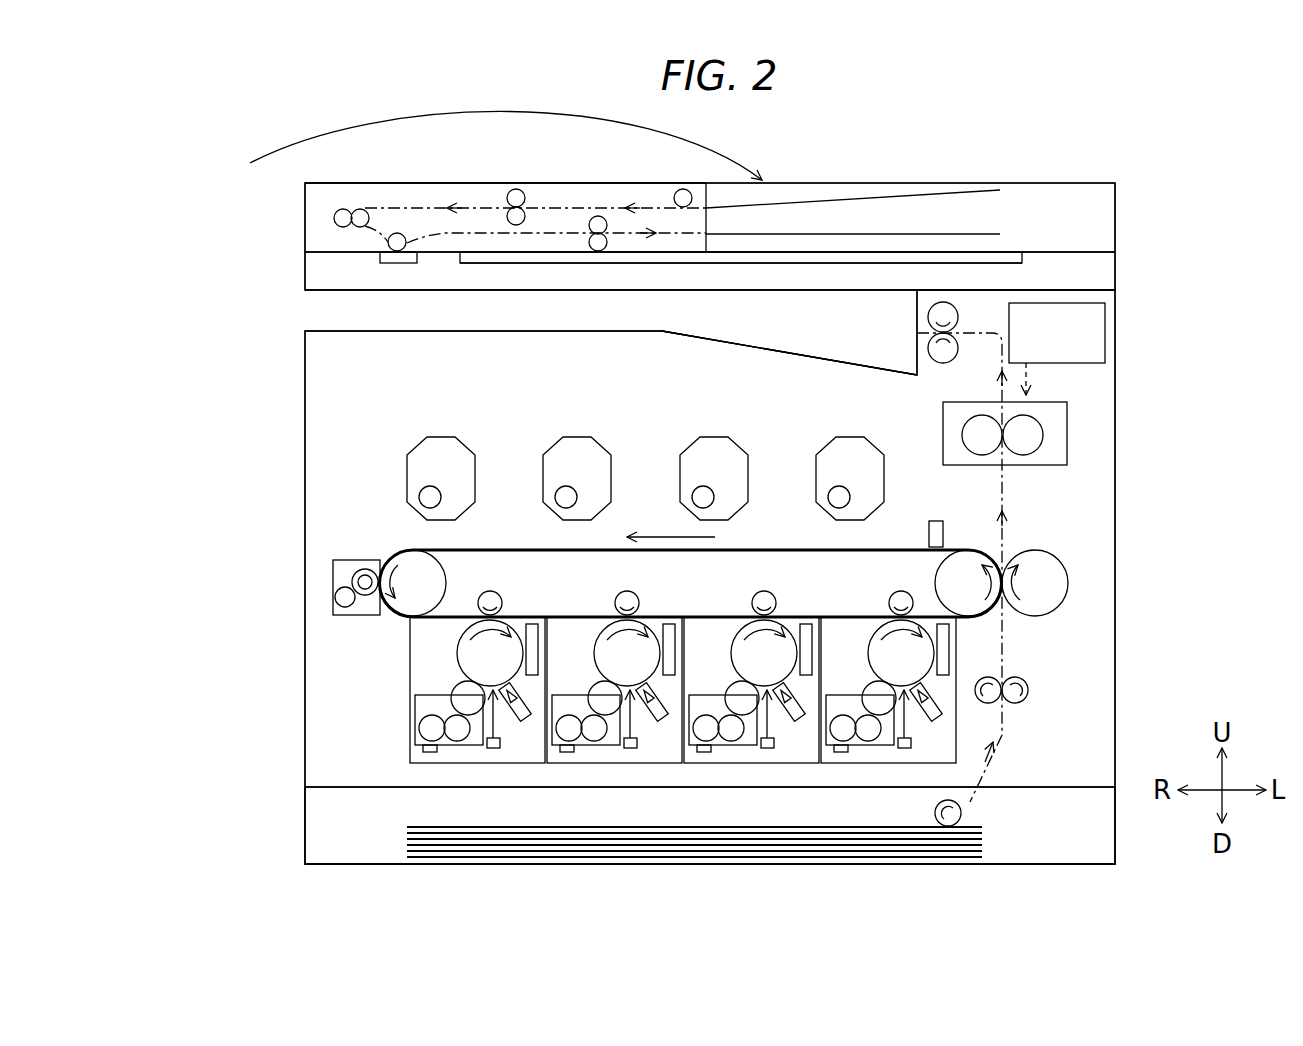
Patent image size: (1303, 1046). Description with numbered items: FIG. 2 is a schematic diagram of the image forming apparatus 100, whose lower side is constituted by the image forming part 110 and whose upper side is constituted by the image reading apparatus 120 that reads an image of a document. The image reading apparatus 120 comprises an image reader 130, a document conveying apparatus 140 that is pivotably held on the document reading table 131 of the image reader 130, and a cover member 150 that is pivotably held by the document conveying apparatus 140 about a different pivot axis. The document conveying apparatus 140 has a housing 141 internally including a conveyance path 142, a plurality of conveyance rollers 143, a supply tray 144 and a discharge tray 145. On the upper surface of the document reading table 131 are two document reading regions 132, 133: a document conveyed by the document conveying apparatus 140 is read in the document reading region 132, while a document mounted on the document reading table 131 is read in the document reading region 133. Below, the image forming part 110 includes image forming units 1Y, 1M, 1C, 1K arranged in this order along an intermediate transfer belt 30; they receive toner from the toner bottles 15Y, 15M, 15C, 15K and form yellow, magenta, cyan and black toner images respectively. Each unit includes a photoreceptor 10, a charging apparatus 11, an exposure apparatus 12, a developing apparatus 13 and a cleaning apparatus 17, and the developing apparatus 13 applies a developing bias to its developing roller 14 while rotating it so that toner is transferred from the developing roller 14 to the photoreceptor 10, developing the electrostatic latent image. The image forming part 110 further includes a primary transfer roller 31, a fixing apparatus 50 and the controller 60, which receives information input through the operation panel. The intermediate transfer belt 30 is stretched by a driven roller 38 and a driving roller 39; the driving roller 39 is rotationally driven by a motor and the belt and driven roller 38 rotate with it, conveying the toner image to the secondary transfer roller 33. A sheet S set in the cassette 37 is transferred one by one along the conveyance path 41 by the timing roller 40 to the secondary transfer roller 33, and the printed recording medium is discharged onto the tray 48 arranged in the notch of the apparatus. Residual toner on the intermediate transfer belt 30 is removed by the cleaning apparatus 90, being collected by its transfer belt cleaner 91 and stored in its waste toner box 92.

The image forming apparatus 100 is at (165, 200).
The image forming part 110 is at (288, 439).
The image reading apparatus 120 is at (212, 150).
The image reader 130 is at (288, 262).
The document reading table 131 is at (543, 272).
The document reading region 132 is at (395, 265).
The document reading region 133 is at (717, 264).
The document conveying apparatus 140 is at (288, 213).
The housing 141 is at (427, 183).
The conveyance path 142 is at (574, 207).
The conveyance rollers 143 is at (516, 189).
The supply tray 144 is at (882, 196).
The discharge tray 145 is at (932, 233).
The cover member 150 is at (488, 145).
The tray 48 is at (882, 373).
The controller 60 is at (1105, 333).
The fixing apparatus 50 is at (1045, 402).
The toner bottle 15Y is at (441, 434).
The toner bottle 15M is at (577, 434).
The toner bottle 15C is at (714, 434).
The toner bottle 15K is at (850, 434).
The intermediate transfer belt 30 is at (566, 617).
The primary transfer roller 31 is at (490, 590).
The secondary transfer roller 33 is at (1033, 552).
The driven roller 38 is at (405, 556).
The driving roller 39 is at (968, 552).
The cleaning apparatus 90 is at (345, 546).
The transfer belt cleaner 91 is at (369, 596).
The waste toner box 92 is at (343, 607).
The timing roller 40 is at (1030, 690).
The conveyance path 41 is at (1006, 654).
The sheet S is at (407, 838).
The cassette 37 is at (1095, 833).
The image forming unit 1Y is at (423, 767).
The image forming unit 1M is at (582, 768).
The image forming unit 1C is at (714, 768).
The image forming unit 1K is at (852, 768).
The photoreceptor 10 is at (462, 650).
The charging apparatus 11 is at (520, 720).
The exposure apparatus 12 is at (493, 750).
The developing apparatus 13 is at (428, 694).
The developing roller 14 is at (470, 708).
The cleaning apparatus 17 is at (531, 622).